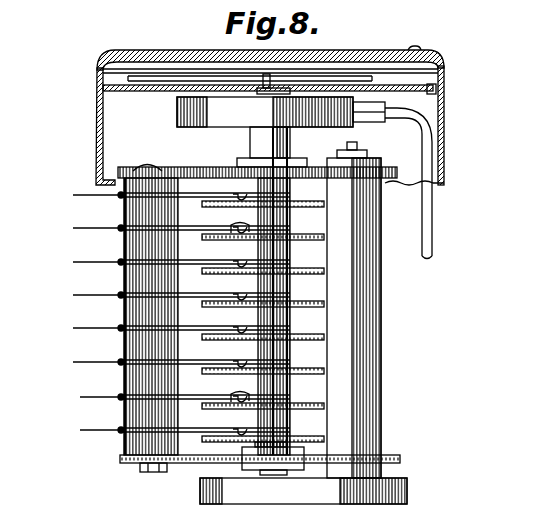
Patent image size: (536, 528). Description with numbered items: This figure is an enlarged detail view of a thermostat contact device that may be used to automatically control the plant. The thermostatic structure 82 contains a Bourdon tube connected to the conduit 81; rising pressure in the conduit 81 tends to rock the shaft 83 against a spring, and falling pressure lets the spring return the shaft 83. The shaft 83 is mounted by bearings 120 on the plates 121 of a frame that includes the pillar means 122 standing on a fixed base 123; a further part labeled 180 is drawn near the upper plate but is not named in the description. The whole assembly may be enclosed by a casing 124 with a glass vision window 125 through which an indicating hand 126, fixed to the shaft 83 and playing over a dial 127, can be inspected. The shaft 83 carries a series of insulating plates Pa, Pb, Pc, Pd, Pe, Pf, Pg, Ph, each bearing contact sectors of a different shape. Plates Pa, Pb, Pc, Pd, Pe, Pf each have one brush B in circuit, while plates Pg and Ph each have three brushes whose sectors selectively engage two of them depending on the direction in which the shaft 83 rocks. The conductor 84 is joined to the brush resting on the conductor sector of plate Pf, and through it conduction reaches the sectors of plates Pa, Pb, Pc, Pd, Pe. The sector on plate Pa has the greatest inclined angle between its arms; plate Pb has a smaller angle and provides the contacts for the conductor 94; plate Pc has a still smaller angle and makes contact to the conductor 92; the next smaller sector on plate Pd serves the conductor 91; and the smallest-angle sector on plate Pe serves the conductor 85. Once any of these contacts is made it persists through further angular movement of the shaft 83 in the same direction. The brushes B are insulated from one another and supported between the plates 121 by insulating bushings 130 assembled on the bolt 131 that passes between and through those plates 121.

The vision window 125 is at (384, 52).
The dial 127 is at (112, 85).
The casing 124 is at (445, 133).
The indicating hand 126 is at (178, 82).
The thermostatic structure 82 is at (177, 123).
The conduit 81 is at (434, 229).
The shaft 180 is at (297, 160).
The pillar means 122 is at (387, 390).
The plates 121 is at (178, 168).
The insulating bushings 130 is at (138, 413).
The bolt 131 is at (150, 471).
The bearings 120 is at (298, 466).
The fixed base 123 is at (409, 497).
The conductor 85 is at (88, 195).
The conductor 94 is at (88, 228).
The conductor 92 is at (88, 262).
The conductor 91 is at (88, 295).
The conductor 84 is at (88, 362).
The shaft 83 is at (258, 214).
The brush B is at (200, 400).
The plate Pa is at (301, 201).
The plate Pb is at (301, 234).
The plate Pc is at (301, 268).
The plate Pd is at (301, 301).
The plate Pe is at (301, 334).
The plate Pf is at (301, 368).
The plate Pg is at (301, 403).
The plate Ph is at (301, 436).